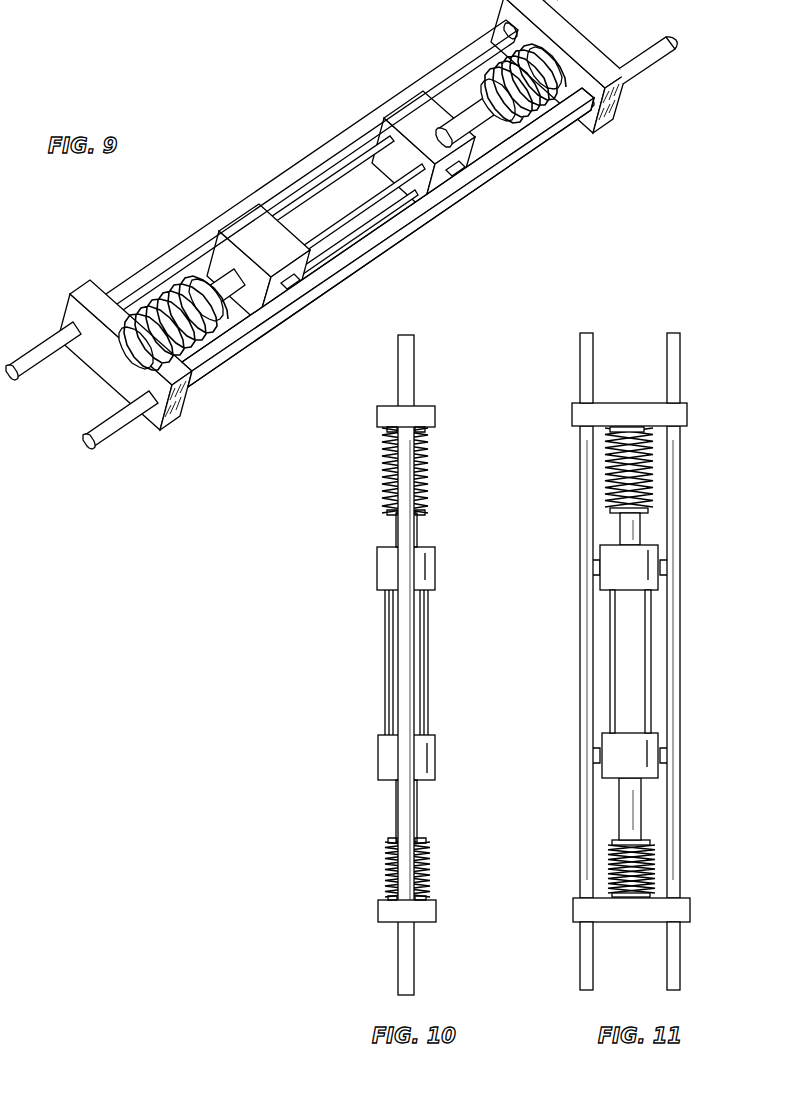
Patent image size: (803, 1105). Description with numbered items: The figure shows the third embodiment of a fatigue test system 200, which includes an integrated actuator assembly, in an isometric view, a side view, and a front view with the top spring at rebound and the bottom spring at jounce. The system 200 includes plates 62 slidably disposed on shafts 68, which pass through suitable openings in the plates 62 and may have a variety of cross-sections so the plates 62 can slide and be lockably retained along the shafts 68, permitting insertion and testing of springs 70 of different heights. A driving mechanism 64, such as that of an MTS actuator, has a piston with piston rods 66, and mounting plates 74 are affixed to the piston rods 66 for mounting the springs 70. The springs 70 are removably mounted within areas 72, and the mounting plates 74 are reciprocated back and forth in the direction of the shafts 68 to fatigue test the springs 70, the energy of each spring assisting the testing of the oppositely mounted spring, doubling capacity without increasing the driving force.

In FIG. 9, the system 200 is at (287, 97).
In FIG. 10, the system 200 is at (354, 503).
In FIG. 11, the system 200 is at (565, 470).
In FIG. 9, the plates 62 is at (178, 401).
In FIG. 10, the plates 62 is at (436, 412).
In FIG. 11, the plates 62 is at (688, 412).
In FIG. 9, the driving mechanism 64 is at (317, 192).
In FIG. 10, the driving mechanism 64 is at (384, 672).
In FIG. 11, the driving mechanism 64 is at (606, 672).
In FIG. 9, the piston rods 66 is at (232, 264).
In FIG. 11, the piston rods 66 is at (641, 530).
In FIG. 9, the shafts 68 is at (374, 113).
In FIG. 11, the shafts 68 is at (579, 522).
In FIG. 9, the springs 70 is at (194, 322).
In FIG. 11, the springs 70 is at (615, 873).
In FIG. 9, the areas 72 is at (353, 212).
In FIG. 11, the areas 72 is at (636, 662).
In FIG. 9, the mounting plates 74 is at (205, 292).
In FIG. 11, the mounting plates 74 is at (612, 842).